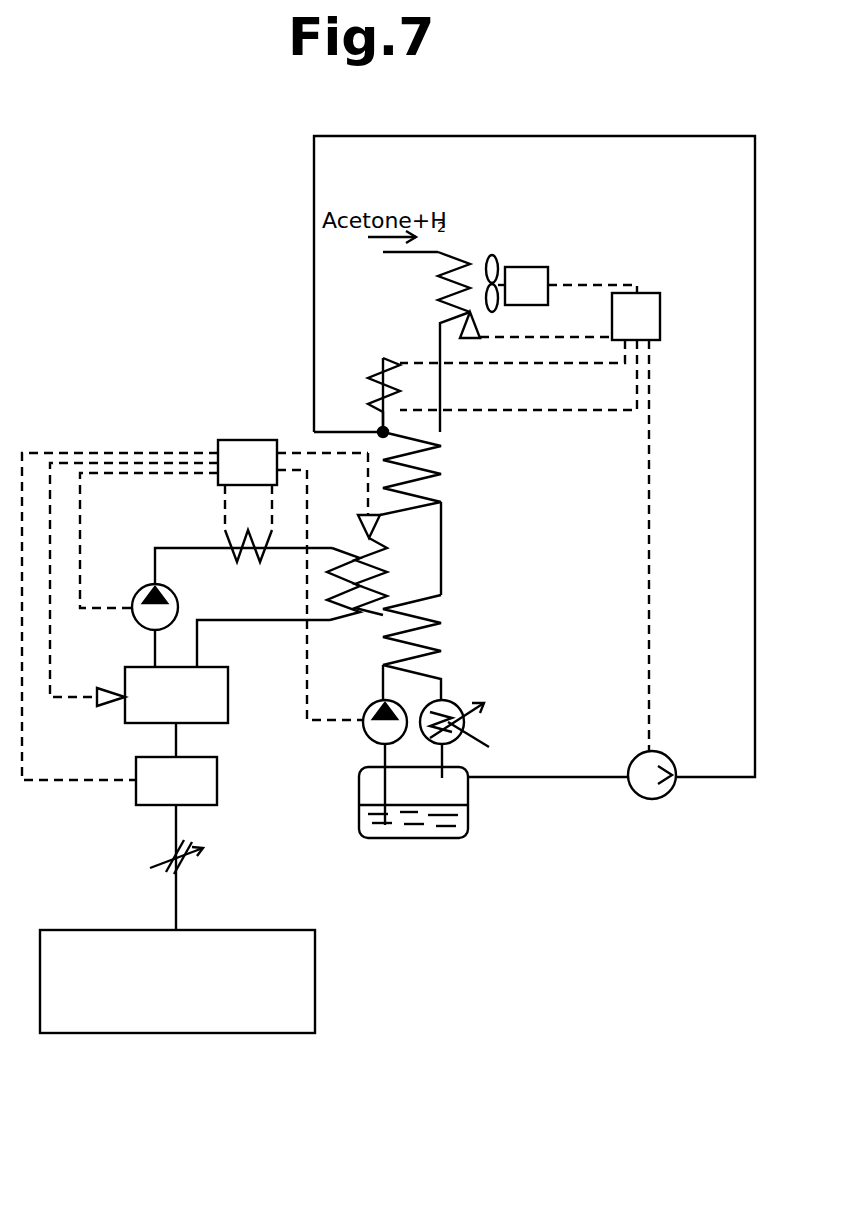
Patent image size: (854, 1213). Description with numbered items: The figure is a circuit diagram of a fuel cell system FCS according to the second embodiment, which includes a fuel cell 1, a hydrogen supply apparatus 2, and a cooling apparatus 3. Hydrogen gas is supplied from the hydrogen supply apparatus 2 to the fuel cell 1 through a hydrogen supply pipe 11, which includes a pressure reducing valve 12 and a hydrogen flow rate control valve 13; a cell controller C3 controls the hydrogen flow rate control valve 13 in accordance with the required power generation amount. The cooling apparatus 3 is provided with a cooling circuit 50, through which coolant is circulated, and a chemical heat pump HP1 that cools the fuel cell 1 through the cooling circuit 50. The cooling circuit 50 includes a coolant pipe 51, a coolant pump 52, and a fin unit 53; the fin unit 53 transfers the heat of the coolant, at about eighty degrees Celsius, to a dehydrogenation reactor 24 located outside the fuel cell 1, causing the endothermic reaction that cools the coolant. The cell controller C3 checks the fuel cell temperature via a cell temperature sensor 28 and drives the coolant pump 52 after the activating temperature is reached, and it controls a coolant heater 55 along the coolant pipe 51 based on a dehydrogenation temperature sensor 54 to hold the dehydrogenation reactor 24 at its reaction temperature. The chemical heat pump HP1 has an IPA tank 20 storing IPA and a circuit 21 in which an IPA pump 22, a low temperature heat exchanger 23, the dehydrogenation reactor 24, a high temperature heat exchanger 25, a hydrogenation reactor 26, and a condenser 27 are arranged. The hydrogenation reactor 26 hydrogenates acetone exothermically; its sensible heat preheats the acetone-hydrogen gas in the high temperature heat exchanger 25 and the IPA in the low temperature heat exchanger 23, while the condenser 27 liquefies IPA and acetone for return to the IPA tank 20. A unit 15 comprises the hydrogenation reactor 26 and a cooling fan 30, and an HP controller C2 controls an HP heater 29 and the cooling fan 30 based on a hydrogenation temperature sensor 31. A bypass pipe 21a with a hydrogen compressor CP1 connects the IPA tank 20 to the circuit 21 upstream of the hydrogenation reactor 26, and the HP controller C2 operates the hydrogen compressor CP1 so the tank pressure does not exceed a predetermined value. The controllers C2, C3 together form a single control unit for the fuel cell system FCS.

The fuel cell 1 is at (233, 700).
The hydrogen supply apparatus 2 is at (317, 985).
The cooling apparatus 3 is at (496, 498).
The hydrogen supply pipe 11 is at (176, 892).
The pressure reducing valve 12 is at (185, 862).
The hydrogen flow rate control valve 13 is at (218, 782).
The hydrogenation unit 15 is at (517, 238).
The IPA tank 20 is at (469, 795).
The circuit 21 is at (383, 290).
The bypass pipe 21a is at (755, 560).
The IPA pump 22 is at (369, 735).
The low temperature heat exchanger 23 is at (456, 628).
The dehydrogenation reactor 24 is at (373, 576).
The high temperature heat exchanger 25 is at (456, 461).
The hydrogenation reactor 26 is at (480, 236).
The condenser 27 is at (454, 700).
The cell temperature sensor 28 is at (110, 688).
The HP heater 29 is at (382, 373).
The cooling fan 30 is at (536, 264).
The hydrogenation temperature sensor 31 is at (470, 340).
The cooling circuit 50 is at (186, 540).
The coolant pipe 51 is at (222, 620).
The coolant pump 52 is at (138, 598).
The fin unit 53 is at (351, 620).
The dehydrogenation temperature sensor 54 is at (362, 532).
The coolant heater 55 is at (264, 560).
The HP controller C2 is at (661, 314).
The cell controller C3 is at (248, 438).
The hydrogen compressor CP1 is at (686, 737).
The fuel cell system FCS is at (178, 420).
The chemical heat pump HP1 is at (467, 554).
The element IPA is at (426, 824).